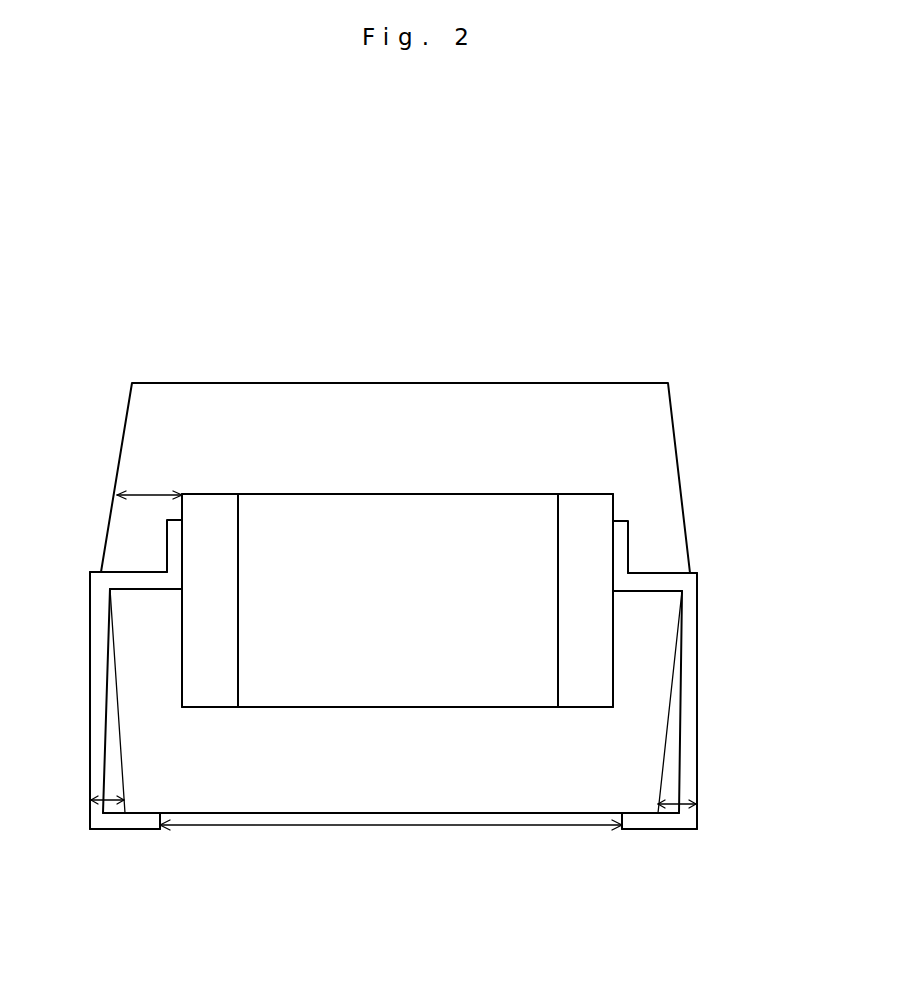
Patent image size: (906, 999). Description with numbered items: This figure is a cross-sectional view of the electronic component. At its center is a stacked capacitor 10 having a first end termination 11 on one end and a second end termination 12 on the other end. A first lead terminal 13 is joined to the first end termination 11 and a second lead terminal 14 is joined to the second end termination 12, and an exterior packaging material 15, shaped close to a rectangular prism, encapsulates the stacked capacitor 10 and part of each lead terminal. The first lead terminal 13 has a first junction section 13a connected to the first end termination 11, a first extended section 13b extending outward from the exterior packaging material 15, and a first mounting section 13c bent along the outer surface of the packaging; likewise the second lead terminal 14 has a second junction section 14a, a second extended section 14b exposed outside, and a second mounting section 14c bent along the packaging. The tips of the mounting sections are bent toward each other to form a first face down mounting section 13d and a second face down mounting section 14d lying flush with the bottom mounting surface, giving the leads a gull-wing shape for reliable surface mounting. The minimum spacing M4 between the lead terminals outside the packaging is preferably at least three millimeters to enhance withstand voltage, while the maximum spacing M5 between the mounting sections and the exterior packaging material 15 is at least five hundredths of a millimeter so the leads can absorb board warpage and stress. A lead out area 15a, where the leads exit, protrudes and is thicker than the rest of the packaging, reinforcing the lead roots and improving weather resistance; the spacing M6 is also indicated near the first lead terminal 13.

The stacked capacitor 10 is at (374, 508).
The first end termination 11 is at (208, 503).
The second end termination 12 is at (580, 507).
The first lead terminal 13 is at (107, 682).
The first junction section 13a is at (170, 530).
The first extended section 13b is at (143, 591).
The first mounting section 13c is at (100, 720).
The first face down mounting section 13d is at (137, 822).
The second lead terminal 14 is at (701, 693).
The second junction section 14a is at (622, 545).
The second extended section 14b is at (662, 580).
The second mounting section 14c is at (692, 648).
The second face down mounting section 14d is at (663, 830).
The exterior packaging material 15 is at (650, 405).
The lead out area 15a is at (100, 571).
The minimum spacing M4 is at (391, 838).
The maximum spacing M5 is at (393, 787).
The dimension between housing side and element M6 is at (149, 481).